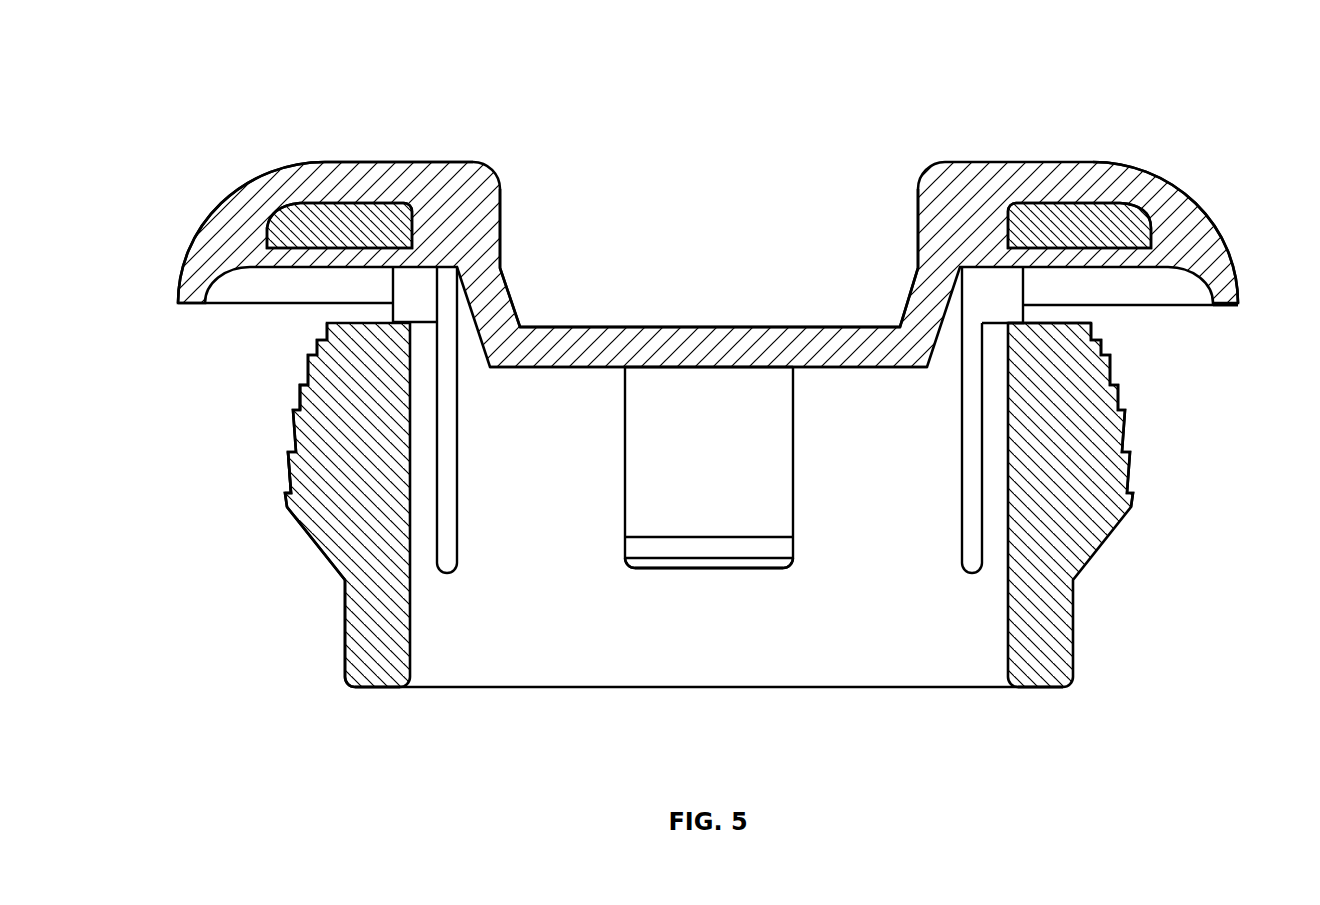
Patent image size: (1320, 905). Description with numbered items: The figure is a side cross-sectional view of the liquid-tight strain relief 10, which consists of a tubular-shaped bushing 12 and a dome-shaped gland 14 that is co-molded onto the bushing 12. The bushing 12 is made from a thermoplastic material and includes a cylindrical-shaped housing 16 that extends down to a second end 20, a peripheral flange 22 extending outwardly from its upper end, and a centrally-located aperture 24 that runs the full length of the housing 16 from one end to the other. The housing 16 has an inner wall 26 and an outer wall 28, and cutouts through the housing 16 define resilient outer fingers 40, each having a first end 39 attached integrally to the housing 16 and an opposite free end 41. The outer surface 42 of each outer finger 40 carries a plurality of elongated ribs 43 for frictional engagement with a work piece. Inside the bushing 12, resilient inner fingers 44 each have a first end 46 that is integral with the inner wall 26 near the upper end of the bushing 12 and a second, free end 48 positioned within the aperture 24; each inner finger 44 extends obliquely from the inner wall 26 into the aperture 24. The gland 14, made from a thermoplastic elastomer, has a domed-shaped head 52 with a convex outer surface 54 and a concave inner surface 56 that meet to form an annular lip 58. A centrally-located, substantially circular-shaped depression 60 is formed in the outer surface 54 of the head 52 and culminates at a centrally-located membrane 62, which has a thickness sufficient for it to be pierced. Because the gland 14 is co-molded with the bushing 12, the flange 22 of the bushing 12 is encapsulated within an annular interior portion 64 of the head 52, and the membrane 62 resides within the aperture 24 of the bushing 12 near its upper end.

The liquid-tight strain relief 10 is at (222, 66).
The bushing 12 is at (1055, 615).
The gland 14 is at (1203, 250).
The housing 16 is at (370, 652).
The second end 20 is at (380, 690).
The peripheral flange 22 is at (310, 226).
The aperture 24 is at (684, 608).
The inner wall 26 is at (412, 606).
The outer wall 28 is at (345, 612).
The first end 39 is at (1040, 690).
The outer finger 40 is at (358, 393).
The free end 41 is at (1040, 324).
The outer surface 42 is at (292, 497).
The elongated ribs 43 is at (302, 410).
The inner finger 44 is at (745, 515).
The first end 46 is at (722, 367).
The second end 48 is at (655, 568).
The head 52 is at (236, 222).
The outer surface 54 is at (292, 163).
The inner surface 56 is at (1198, 285).
The annular lip 58 is at (1222, 305).
The depression 60 is at (667, 238).
The membrane 62 is at (712, 327).
The annular interior portion 64 is at (1027, 200).